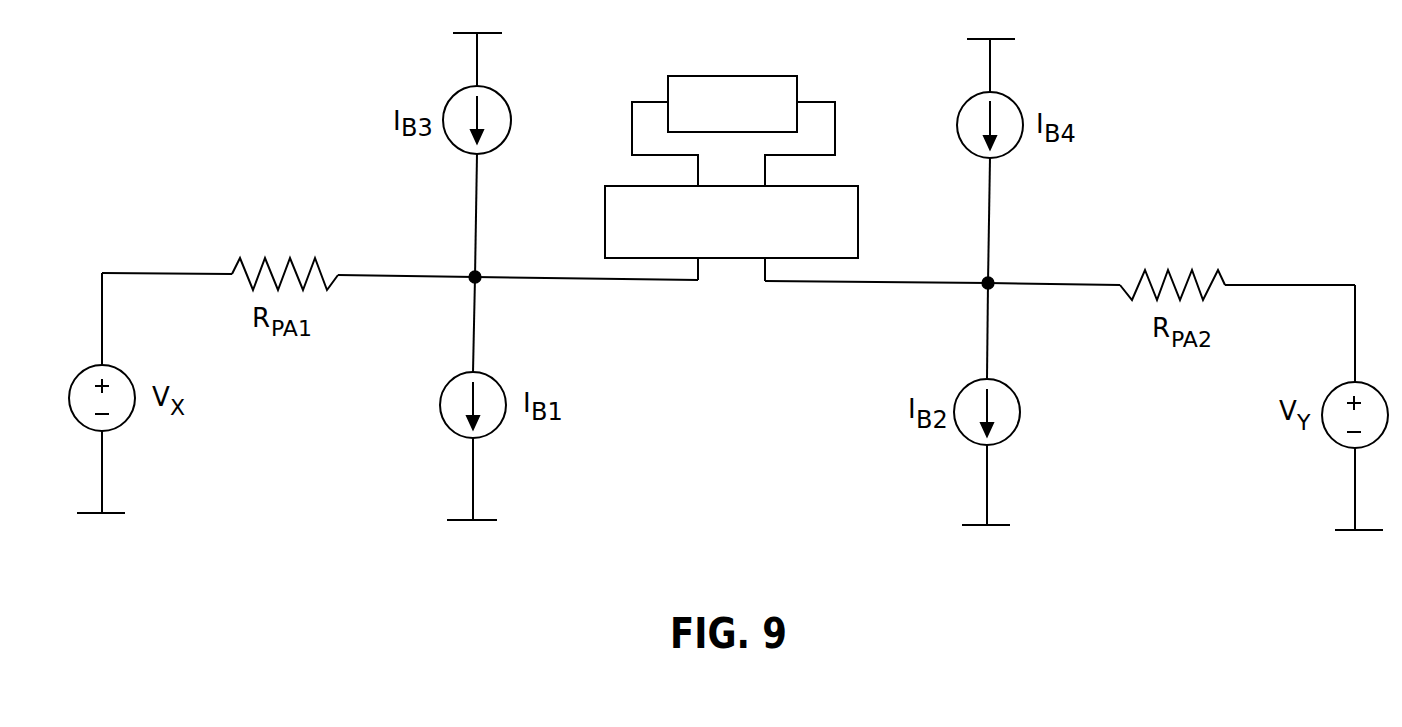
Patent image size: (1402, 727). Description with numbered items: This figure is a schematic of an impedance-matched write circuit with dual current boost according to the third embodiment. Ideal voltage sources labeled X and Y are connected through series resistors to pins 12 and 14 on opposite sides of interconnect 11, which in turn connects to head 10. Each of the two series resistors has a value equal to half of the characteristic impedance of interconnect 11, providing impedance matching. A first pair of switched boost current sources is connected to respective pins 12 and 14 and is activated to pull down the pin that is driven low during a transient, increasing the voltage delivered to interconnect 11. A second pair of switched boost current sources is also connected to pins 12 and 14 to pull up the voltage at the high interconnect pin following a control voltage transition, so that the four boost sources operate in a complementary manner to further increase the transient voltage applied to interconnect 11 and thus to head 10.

The head 10 is at (732, 76).
The interconnect 11 is at (605, 217).
The pin 12 is at (471, 271).
The pin 14 is at (993, 278).